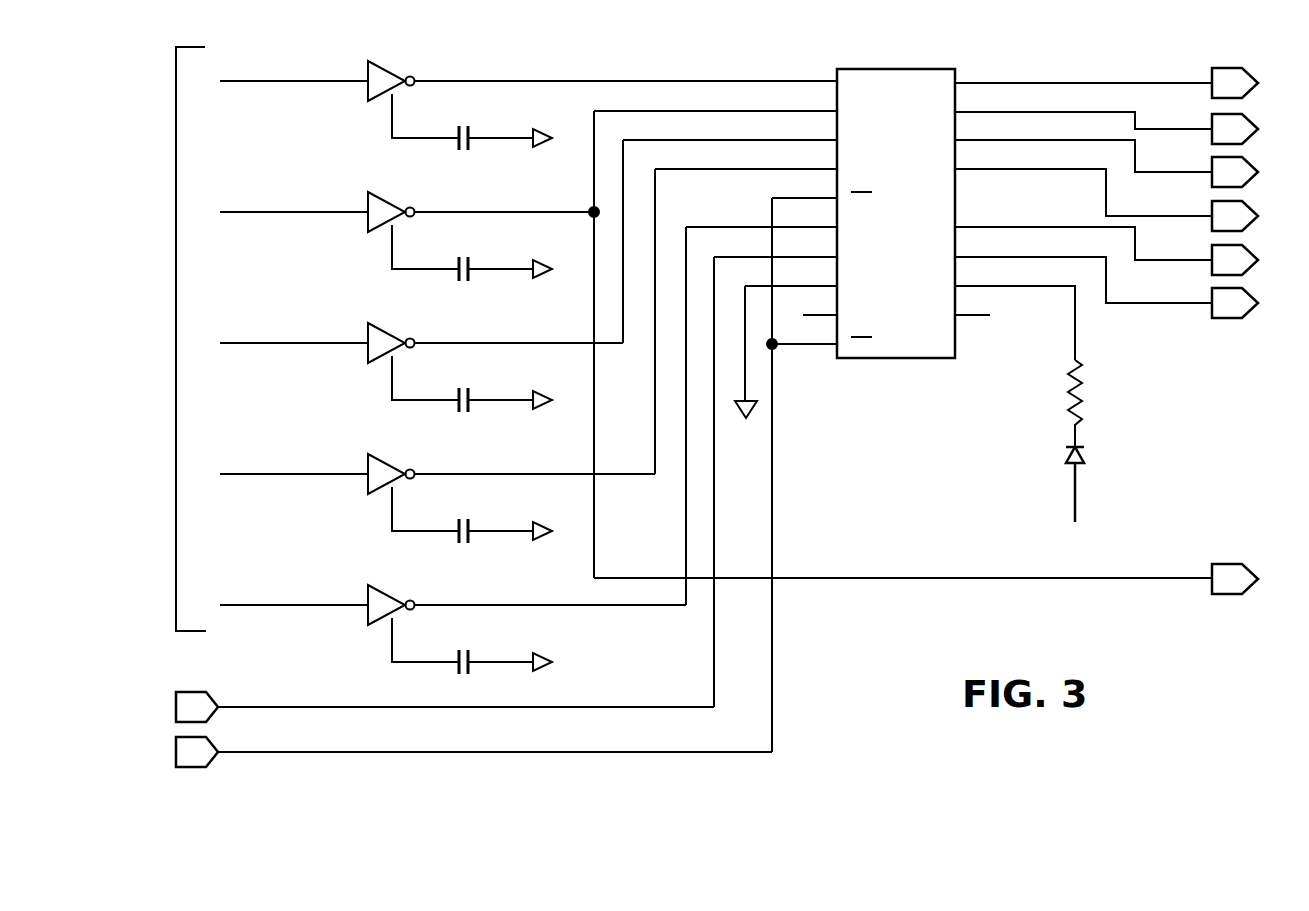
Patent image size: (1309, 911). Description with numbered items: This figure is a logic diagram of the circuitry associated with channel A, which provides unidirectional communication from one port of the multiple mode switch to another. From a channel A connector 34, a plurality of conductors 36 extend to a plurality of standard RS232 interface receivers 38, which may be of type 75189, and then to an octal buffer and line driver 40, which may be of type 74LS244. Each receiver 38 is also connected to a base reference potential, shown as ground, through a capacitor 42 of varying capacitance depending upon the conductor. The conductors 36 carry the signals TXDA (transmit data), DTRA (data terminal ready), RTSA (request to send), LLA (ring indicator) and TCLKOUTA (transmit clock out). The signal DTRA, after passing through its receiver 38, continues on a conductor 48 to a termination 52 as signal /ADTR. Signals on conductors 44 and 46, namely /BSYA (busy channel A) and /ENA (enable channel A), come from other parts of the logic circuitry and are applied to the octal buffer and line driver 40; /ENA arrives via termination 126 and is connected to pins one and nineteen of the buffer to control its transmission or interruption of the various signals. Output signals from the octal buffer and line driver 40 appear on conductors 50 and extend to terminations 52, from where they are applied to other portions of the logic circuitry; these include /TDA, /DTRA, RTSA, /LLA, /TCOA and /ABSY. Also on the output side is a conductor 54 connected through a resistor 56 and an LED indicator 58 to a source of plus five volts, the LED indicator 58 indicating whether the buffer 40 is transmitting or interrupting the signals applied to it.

The channel A connector 34 is at (176, 158).
The conductors 36 is at (263, 83).
The RS232 interface receivers 38 is at (372, 91).
The octal buffer and line driver 40 is at (915, 359).
The capacitor 42 is at (464, 151).
The conductor 44 is at (316, 707).
The conductor 46 is at (322, 752).
The conductor 48 is at (880, 578).
The conductors 50 is at (1027, 82).
The terminations 52 is at (1259, 83).
The conductor 54 is at (1027, 285).
The resistor 56 is at (1068, 378).
The LED indicator 58 is at (1066, 455).
The termination 126 is at (176, 745).